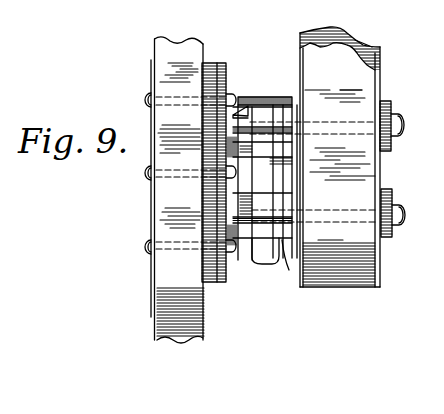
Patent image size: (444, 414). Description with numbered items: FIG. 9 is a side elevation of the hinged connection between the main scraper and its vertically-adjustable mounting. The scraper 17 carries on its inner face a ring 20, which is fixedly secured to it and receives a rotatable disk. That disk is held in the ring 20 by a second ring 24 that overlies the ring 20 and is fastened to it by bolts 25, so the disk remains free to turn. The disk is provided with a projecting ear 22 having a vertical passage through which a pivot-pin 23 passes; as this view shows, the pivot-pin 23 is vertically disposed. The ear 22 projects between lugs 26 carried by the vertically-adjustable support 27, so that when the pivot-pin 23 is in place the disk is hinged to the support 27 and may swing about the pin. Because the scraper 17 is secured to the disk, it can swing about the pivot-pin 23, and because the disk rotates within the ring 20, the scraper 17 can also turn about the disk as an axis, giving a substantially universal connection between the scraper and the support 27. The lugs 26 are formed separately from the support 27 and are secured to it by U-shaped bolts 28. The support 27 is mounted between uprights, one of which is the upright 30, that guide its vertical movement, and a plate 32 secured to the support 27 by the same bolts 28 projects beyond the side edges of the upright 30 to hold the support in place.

The scraper 17 is at (155, 80).
The ring 20 is at (207, 67).
The projecting ear 22 is at (304, 182).
The pivot-pin 23 is at (265, 100).
The ring 24 is at (225, 68).
The bolts 25 is at (150, 167).
The lugs 26 is at (285, 117).
The vertically-adjustable support 27 is at (380, 48).
The U-shaped bolts 28 is at (405, 127).
The upright 30 is at (362, 90).
The plate 32 is at (392, 148).